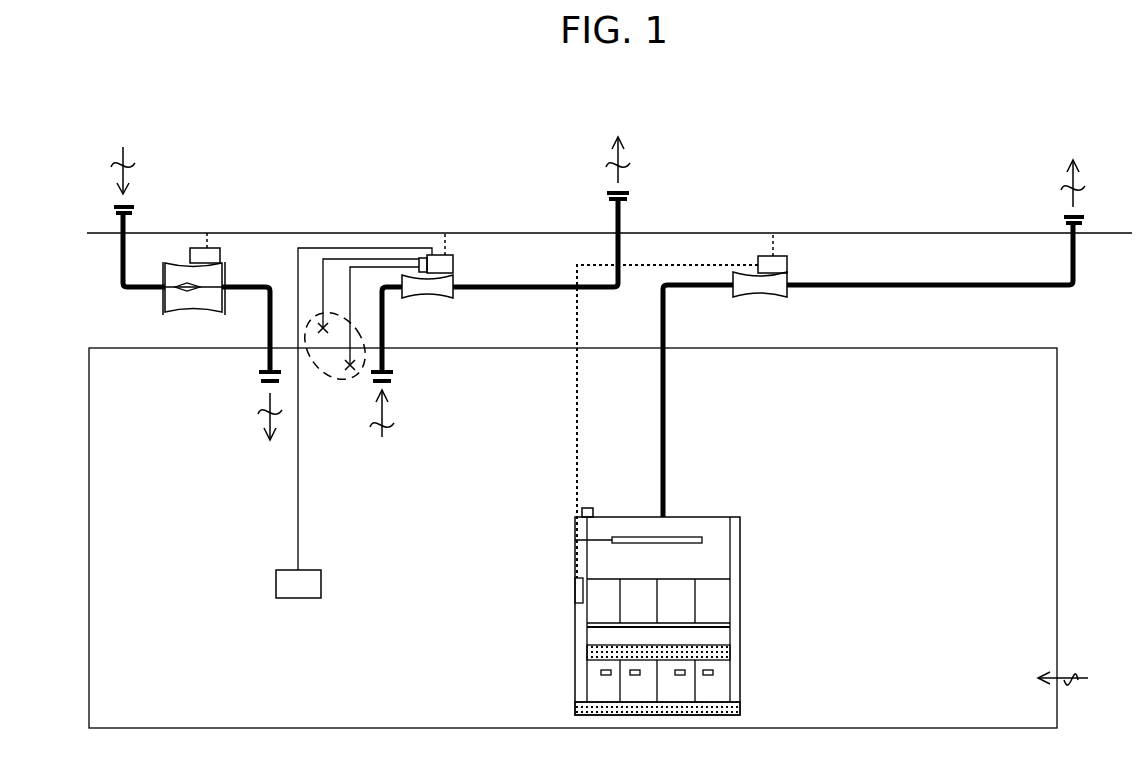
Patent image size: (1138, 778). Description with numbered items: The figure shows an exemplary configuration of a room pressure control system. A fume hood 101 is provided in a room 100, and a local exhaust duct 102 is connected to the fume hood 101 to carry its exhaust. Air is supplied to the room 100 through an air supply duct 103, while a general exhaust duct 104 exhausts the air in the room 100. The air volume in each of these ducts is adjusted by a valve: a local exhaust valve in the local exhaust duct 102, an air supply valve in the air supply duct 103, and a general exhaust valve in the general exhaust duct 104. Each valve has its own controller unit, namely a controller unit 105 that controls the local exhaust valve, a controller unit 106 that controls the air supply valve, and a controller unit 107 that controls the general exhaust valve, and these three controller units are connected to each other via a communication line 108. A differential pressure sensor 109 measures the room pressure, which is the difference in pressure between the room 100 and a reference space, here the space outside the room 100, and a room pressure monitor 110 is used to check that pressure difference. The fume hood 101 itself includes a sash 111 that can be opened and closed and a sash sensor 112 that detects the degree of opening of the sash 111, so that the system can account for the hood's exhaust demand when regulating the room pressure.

The room 100 is at (1058, 453).
The fume hood 101 is at (693, 517).
The local exhaust duct 102 is at (666, 433).
The air supply duct 103 is at (265, 365).
The general exhaust duct 104 is at (387, 365).
The controller unit 105 is at (782, 263).
The controller unit 106 is at (213, 255).
The controller unit 107 is at (448, 263).
The communication line 108 is at (675, 233).
The differential pressure sensor 109 is at (343, 380).
The room pressure monitor 110 is at (303, 570).
The sash 111 is at (723, 602).
The sash sensor 112 is at (592, 508).